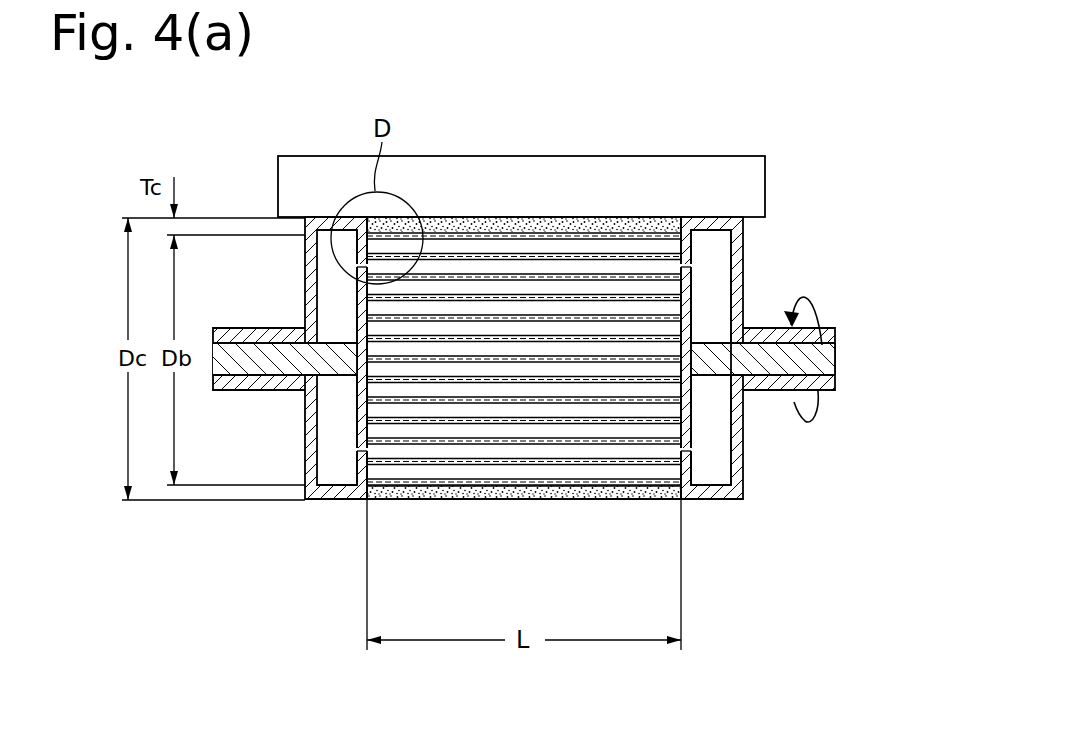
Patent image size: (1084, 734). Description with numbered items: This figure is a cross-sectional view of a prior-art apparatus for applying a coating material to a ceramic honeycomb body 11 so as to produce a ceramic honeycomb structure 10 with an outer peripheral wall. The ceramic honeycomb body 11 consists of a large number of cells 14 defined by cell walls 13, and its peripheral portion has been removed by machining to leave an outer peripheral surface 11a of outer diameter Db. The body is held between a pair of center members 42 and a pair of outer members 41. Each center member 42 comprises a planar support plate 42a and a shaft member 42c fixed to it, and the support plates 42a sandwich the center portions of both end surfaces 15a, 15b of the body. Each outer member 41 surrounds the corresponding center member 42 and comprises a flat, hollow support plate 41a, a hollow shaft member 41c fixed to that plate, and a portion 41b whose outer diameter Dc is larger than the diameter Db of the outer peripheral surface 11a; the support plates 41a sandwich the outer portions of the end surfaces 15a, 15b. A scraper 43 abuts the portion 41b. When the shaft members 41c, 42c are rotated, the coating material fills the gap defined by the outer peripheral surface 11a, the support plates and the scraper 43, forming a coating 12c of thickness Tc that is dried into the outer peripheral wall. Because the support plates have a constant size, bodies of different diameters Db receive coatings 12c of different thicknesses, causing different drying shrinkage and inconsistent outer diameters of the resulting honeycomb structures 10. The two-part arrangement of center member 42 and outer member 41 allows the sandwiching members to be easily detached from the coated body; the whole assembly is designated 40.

The ceramic honeycomb structure 10 is at (524, 352).
The ceramic honeycomb body 11 is at (568, 288).
The outer peripheral surface 11a is at (551, 487).
The coating 12c is at (612, 490).
The cell walls 13 is at (442, 443).
The cells 14 is at (498, 452).
The end surface 15a is at (355, 480).
The end surface 15b is at (693, 480).
The rotary drive device 40 is at (580, 352).
The outer member 41 is at (559, 324).
The hollow support plate 41a is at (738, 265).
The scraper-abutting portion 41b is at (716, 214).
The hollow shaft member 41c is at (773, 333).
The center member 42 is at (559, 375).
The planar support plate 42a is at (737, 448).
The shaft member 42c is at (762, 362).
The scraper 43 is at (476, 172).